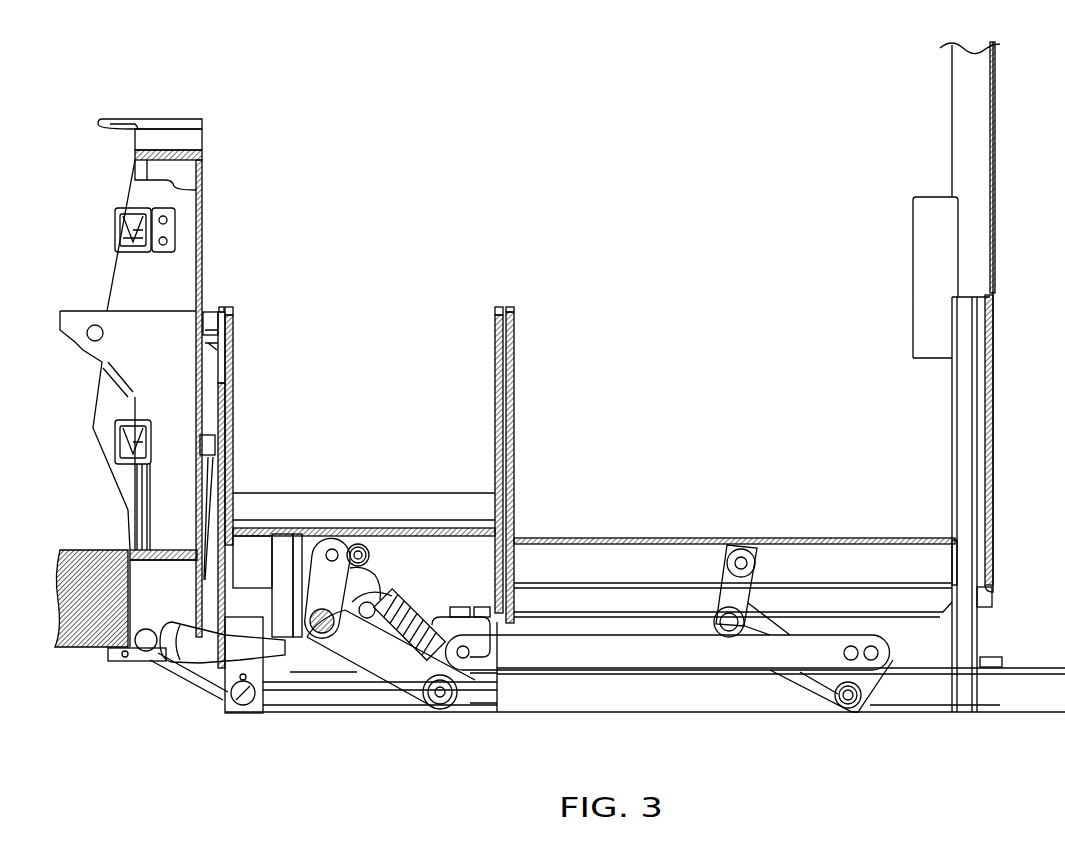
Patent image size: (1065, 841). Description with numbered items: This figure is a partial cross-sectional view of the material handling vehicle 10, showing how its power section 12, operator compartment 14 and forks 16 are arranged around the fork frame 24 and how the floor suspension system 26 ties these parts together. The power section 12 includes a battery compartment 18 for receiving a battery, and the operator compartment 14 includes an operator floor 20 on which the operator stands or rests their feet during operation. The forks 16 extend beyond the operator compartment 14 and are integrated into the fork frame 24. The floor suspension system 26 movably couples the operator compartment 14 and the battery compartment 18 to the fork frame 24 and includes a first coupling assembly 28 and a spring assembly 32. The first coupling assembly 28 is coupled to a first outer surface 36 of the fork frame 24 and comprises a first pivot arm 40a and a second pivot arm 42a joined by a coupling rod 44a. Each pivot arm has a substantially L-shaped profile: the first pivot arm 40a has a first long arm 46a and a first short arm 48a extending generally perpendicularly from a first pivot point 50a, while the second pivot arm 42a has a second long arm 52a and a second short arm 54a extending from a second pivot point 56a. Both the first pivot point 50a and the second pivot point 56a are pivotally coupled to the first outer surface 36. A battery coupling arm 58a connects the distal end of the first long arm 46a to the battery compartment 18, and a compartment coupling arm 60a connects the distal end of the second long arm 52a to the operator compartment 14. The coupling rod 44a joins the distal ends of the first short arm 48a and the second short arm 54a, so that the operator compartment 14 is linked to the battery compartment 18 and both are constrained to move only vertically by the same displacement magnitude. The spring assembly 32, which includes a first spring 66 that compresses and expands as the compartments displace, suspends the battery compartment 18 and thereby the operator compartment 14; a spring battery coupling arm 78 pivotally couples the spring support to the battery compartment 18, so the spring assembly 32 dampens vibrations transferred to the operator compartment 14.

The material handling vehicle 10 is at (522, 180).
The power section 12 is at (147, 80).
The operator compartment 14 is at (731, 465).
The forks 16 is at (1040, 665).
The battery compartment 18 is at (347, 480).
The operator floor 20 is at (613, 538).
The fork frame 24 is at (438, 722).
The floor suspension system 26 is at (887, 745).
The first coupling assembly 28 is at (702, 693).
The spring assembly 32 is at (400, 583).
The first outer surface 36 is at (577, 695).
The first pivot arm 40a is at (409, 676).
The second pivot arm 42a is at (820, 690).
The coupling rod 44a is at (650, 660).
The first long arm 46a is at (370, 655).
The first short arm 48a is at (460, 695).
The first pivot point 50a is at (452, 704).
The second long arm 52a is at (800, 680).
The second short arm 54a is at (872, 684).
The second pivot point 56a is at (849, 697).
The battery coupling arm 58a is at (330, 575).
The compartment coupling arm 60a is at (745, 598).
The first spring 66 is at (420, 610).
The spring battery coupling arm 78 is at (372, 582).